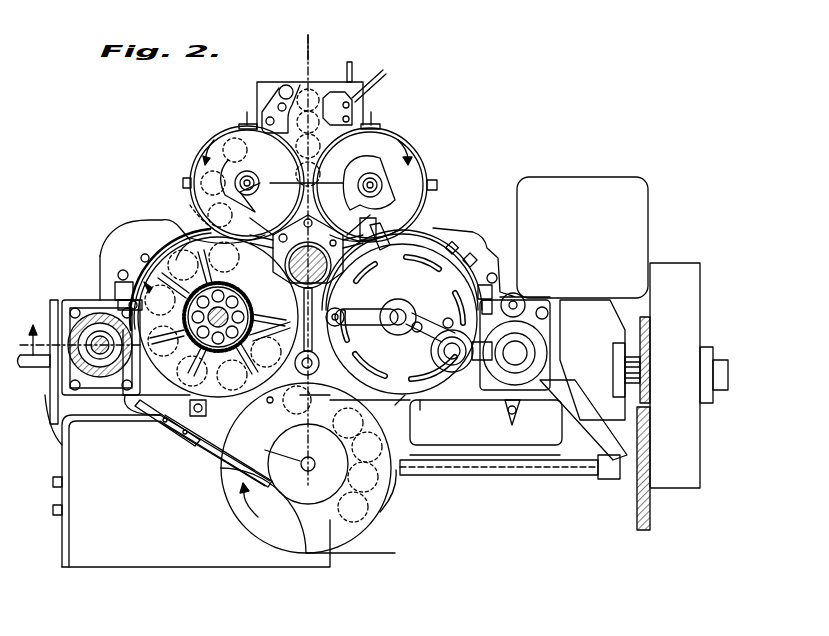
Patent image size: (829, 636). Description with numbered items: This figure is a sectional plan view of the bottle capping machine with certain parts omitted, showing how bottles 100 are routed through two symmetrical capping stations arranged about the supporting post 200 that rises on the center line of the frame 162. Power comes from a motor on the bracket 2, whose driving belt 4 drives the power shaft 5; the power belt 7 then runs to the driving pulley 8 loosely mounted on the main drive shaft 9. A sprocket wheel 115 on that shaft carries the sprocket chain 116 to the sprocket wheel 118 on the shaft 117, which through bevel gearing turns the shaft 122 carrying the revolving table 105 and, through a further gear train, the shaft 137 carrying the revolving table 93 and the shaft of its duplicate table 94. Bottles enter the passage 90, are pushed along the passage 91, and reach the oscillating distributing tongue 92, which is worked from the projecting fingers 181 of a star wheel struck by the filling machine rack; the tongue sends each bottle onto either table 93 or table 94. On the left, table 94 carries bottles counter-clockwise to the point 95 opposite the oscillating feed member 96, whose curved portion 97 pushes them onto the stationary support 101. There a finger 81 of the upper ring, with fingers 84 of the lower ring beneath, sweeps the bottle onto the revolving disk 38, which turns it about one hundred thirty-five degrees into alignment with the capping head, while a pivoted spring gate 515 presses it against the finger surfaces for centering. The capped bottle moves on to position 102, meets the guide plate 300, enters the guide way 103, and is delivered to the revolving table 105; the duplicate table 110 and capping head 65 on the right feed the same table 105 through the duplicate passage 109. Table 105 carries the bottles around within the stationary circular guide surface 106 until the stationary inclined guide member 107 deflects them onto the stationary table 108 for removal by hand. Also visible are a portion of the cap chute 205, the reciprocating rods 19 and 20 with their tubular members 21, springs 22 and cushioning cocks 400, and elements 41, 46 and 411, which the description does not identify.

The bracket 2 is at (612, 187).
The driving belt 4 is at (482, 349).
The power shaft 5 is at (332, 45).
The power belt 7 is at (68, 372).
The driving pulley 8 is at (700, 292).
The main drive shaft 9 is at (728, 375).
The reciprocating rod 19 is at (100, 335).
The reciprocating rod 20 is at (522, 350).
The tubular member 21 is at (545, 358).
The spring 22 is at (72, 322).
The revolving disk or support 38 is at (195, 250).
The wheel hub 41 is at (240, 182).
The crank hub 46 is at (398, 304).
The bottle capping head 65 is at (438, 351).
The bottle holding fingers 81 is at (172, 460).
The bottle holding fingers 84 is at (235, 240).
The passage 90 is at (352, 88).
The passage 91 is at (283, 112).
The oscillating tongue or distributing member 92 is at (290, 163).
The revolving table 93 is at (415, 173).
The revolving table 94 is at (222, 160).
The point 95 is at (185, 205).
The oscillating feed member 96 is at (262, 238).
The curved portion 97 is at (213, 250).
The bottles 100 is at (335, 75).
The stationary support 101 is at (412, 235).
The position 102 is at (212, 410).
The guide way 103 is at (270, 403).
The revolving table 105 is at (265, 520).
The stationary circular guide surface 106 is at (160, 234).
The stationary inclined guide member 107 is at (228, 472).
The stationary support or table 108 is at (128, 530).
The duplicate passage 109 is at (420, 412).
The table 110 is at (440, 240).
The sprocket wheel 115 is at (645, 338).
The sprocket chain 116 is at (645, 376).
The shaft 117 is at (552, 478).
The sprocket wheel 118 is at (634, 482).
The shaft 122 is at (267, 449).
The shaft 137 is at (375, 172).
The frame 162 is at (320, 232).
The projecting rods or fingers 181 is at (386, 100).
The supporting post 200 is at (390, 313).
The chute 205 is at (378, 238).
The guide plate or member 300 is at (308, 464).
The cocks 400 is at (512, 440).
The pin 411 is at (517, 302).
The pivoted spring controlled gate 515 is at (128, 262).